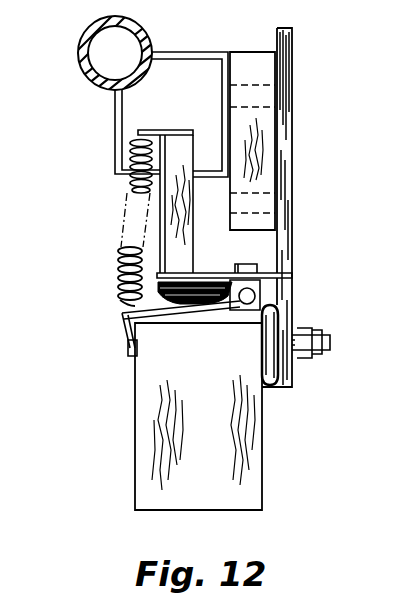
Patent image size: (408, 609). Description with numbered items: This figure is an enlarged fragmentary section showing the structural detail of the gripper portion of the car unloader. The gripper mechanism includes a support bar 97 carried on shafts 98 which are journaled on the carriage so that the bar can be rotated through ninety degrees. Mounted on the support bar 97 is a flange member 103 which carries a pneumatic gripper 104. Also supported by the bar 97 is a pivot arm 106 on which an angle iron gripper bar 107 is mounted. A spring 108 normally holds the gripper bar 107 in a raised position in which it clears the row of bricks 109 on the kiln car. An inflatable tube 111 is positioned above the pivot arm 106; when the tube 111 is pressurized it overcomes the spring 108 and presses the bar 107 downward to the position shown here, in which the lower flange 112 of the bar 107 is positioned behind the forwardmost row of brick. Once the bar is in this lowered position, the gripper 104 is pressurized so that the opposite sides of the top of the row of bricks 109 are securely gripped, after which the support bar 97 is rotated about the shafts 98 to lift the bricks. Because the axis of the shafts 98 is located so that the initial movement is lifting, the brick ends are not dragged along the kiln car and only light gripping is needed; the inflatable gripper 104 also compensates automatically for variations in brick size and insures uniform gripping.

The support bar 97 is at (115, 149).
The shafts 98 is at (80, 63).
The flange member 103 is at (287, 296).
The pneumatic gripper 104 is at (280, 330).
The pivot arm 106 is at (205, 306).
The angle iron gripper bar 107 is at (121, 318).
The spring 108 is at (120, 255).
The row of bricks 109 is at (262, 445).
The inflatable tube 111 is at (218, 306).
The lower flange 112 is at (128, 348).